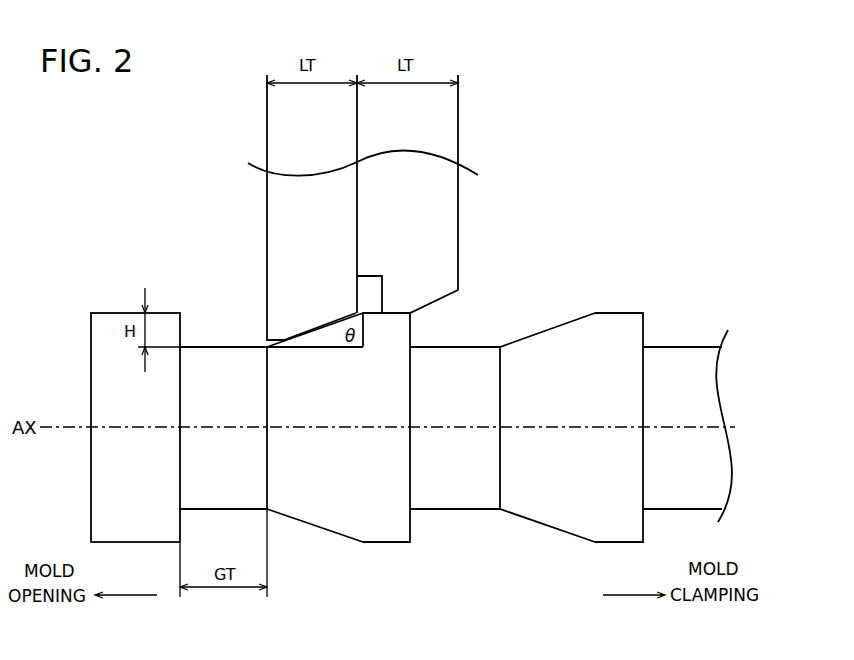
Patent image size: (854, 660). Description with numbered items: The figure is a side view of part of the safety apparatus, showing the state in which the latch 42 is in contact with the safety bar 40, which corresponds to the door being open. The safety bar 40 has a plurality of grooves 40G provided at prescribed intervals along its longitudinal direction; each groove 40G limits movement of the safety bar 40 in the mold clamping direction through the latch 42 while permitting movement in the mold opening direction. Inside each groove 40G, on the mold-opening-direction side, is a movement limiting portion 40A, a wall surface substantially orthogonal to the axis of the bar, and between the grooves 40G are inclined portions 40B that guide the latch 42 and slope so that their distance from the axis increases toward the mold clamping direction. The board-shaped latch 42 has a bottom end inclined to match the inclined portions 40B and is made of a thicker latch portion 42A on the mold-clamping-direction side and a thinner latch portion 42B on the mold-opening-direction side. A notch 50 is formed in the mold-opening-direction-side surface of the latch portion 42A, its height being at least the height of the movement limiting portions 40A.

The safety bar 40 is at (419, 408).
The movement limiting portion 40A is at (180, 328).
The inclined portion 40B is at (343, 347).
The groove 40G is at (238, 318).
The latch 42 is at (424, 207).
The latch portion 42A is at (445, 219).
The latch portion 42B is at (421, 194).
The notch 50 is at (368, 300).